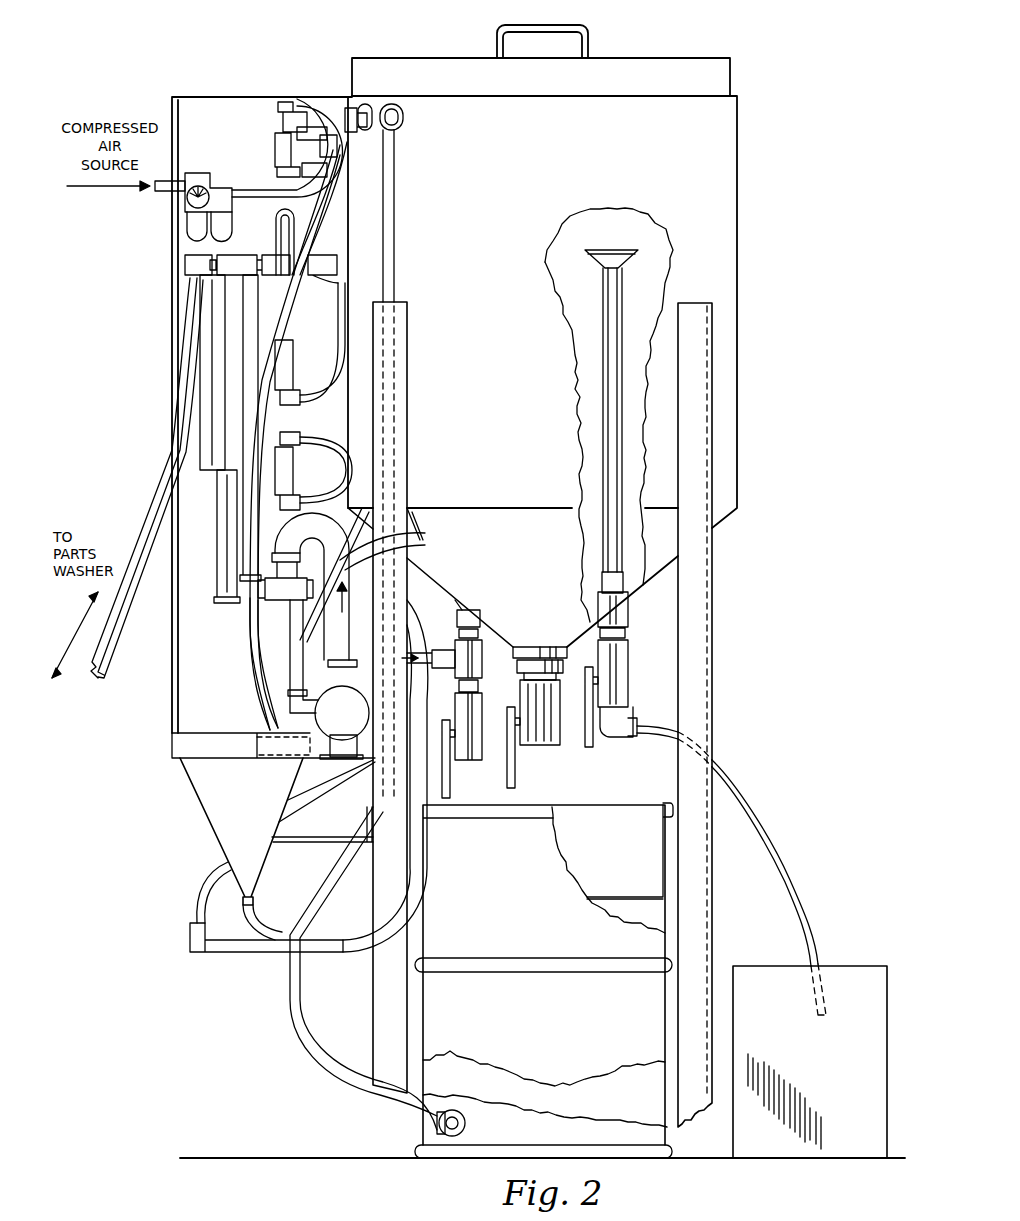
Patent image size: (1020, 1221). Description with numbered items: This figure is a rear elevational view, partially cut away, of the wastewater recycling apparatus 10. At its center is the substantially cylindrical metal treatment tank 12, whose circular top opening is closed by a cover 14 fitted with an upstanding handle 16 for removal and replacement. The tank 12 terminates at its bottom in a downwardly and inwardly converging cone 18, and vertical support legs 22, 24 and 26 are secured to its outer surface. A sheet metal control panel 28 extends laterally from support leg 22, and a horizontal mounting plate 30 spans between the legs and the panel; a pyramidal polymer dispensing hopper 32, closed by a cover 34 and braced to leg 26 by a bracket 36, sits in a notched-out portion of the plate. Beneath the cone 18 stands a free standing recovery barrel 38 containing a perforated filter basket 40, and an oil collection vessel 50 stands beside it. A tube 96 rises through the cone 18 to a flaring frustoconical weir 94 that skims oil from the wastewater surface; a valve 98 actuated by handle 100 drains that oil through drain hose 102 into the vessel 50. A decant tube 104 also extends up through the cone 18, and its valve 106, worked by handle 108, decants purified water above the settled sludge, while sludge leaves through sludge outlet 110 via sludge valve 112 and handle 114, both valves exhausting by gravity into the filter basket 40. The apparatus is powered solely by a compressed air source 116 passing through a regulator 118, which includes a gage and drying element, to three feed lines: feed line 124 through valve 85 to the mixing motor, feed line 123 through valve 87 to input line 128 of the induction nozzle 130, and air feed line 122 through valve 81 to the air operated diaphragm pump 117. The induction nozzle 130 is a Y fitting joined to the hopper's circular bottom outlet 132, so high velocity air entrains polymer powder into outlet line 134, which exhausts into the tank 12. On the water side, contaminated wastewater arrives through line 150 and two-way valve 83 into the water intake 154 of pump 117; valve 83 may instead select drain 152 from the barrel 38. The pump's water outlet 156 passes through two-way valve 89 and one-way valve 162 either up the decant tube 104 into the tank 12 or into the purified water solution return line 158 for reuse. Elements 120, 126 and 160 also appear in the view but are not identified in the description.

The wastewater recycling apparatus 10 is at (140, 58).
The treatment tank 12 is at (737, 192).
The cover 14 is at (737, 74).
The handle 16 is at (497, 28).
The cone 18 is at (553, 577).
The support leg 22 is at (458, 604).
The support leg 24 is at (712, 652).
The support leg 26 is at (404, 364).
The control panel 28 is at (215, 96).
The mounting plate 30 is at (305, 772).
The polymer dispensing hopper 32 is at (181, 778).
The cover 34 is at (172, 746).
The bracket 36 is at (303, 833).
The recovery barrel 38 is at (562, 1022).
The filter basket 40 is at (610, 806).
The oil collection vessel 50 is at (846, 1082).
The valve 81 is at (272, 136).
The two-way valve 83 is at (286, 252).
The valve 85 is at (280, 358).
The valve 87 is at (283, 463).
The two-way valve 89 is at (290, 604).
The weir 94 is at (592, 262).
The tube 96 is at (602, 300).
The valve 98 is at (630, 652).
The handle 100 is at (598, 748).
The drain hose 102 is at (772, 818).
The decant tube 104 is at (490, 605).
The valve 106 is at (462, 705).
The handle 108 is at (446, 772).
The sludge outlet 110 is at (533, 640).
The sludge valve 112 is at (535, 752).
The handle 114 is at (515, 778).
The compressed air source 116 is at (160, 192).
The pump 117 is at (361, 717).
The regulator 118 is at (214, 182).
The air line 120 is at (272, 196).
The air feed line 122 is at (376, 170).
The feed line 123 is at (305, 95).
The feed line 124 is at (392, 152).
The air line 126 is at (218, 312).
The input line 128 is at (213, 868).
The induction nozzle 130 is at (232, 956).
The bottom outlet 132 is at (254, 902).
The outlet line 134 is at (428, 852).
The line 150 is at (160, 488).
The drain 152 is at (346, 1070).
The water intake 154 is at (248, 623).
The water outlet 156 is at (406, 530).
The purified water solution return line 158 is at (218, 547).
The fitting 160 is at (410, 558).
The one-way valve 162 is at (410, 660).